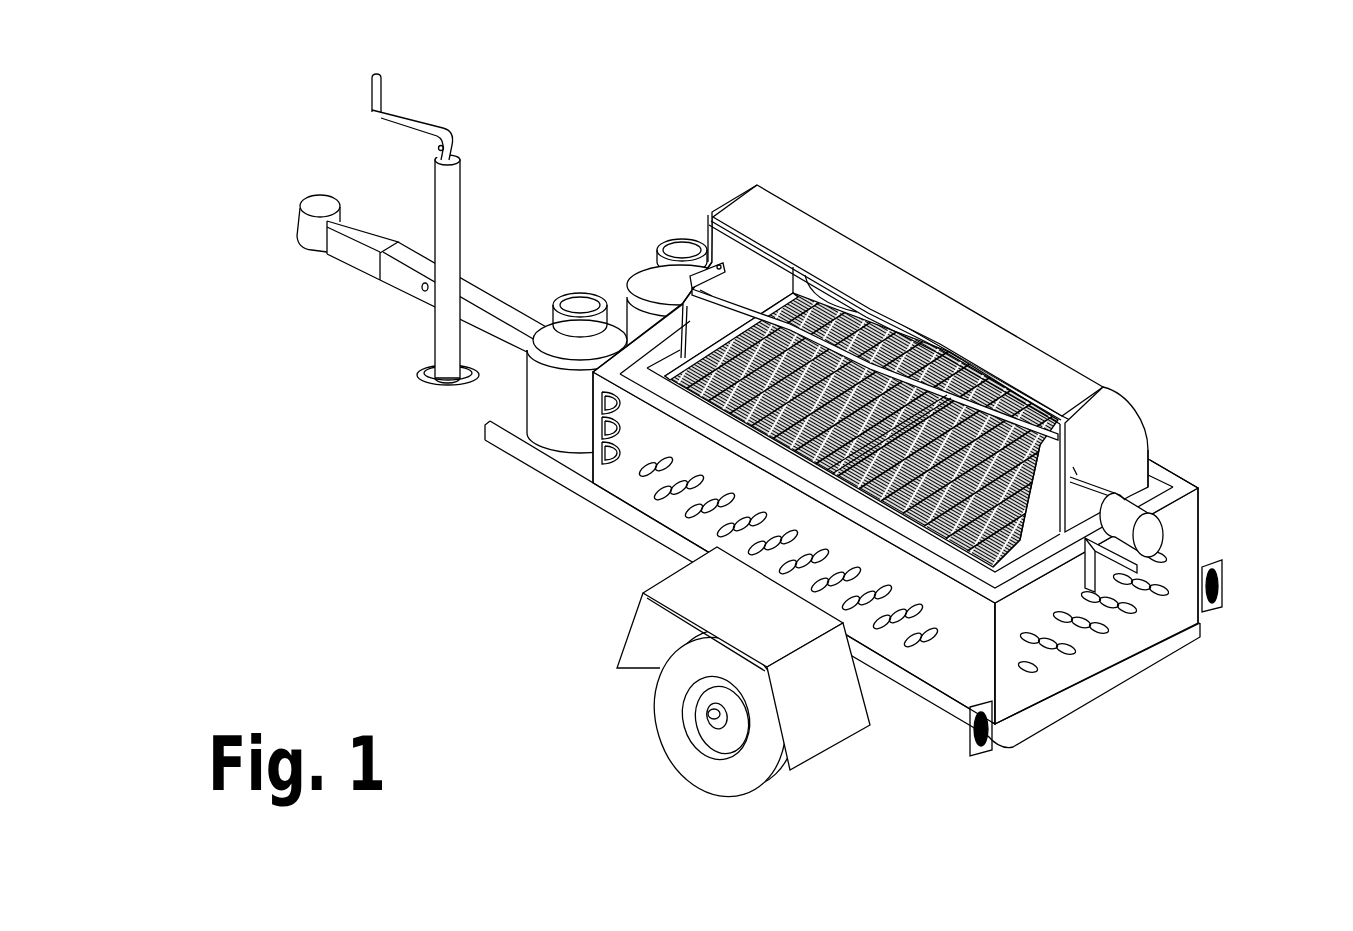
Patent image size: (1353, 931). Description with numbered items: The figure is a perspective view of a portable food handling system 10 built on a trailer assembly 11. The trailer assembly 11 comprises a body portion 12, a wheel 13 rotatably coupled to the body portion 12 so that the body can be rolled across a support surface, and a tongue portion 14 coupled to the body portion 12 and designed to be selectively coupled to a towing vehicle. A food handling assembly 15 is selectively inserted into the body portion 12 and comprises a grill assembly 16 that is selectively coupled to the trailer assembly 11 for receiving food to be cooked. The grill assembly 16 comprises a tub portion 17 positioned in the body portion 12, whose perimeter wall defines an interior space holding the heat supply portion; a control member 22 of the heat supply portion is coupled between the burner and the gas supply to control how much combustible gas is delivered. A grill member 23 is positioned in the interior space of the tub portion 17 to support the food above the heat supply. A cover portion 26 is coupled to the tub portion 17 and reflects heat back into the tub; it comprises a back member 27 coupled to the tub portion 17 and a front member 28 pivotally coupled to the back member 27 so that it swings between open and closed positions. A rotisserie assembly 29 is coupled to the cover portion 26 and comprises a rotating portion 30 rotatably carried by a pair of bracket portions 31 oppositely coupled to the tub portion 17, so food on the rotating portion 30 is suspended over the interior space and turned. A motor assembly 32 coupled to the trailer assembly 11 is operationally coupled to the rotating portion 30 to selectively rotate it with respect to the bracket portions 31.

The portable food handling system 10 is at (1087, 190).
The trailer assembly 11 is at (478, 466).
The body portion 12 is at (843, 503).
The wheel 13 is at (675, 717).
The tongue portion 14 is at (397, 273).
The food handling assembly 15 is at (949, 250).
The grill assembly 16 is at (1036, 285).
The tub portion 17 is at (993, 560).
The control member 22 is at (597, 433).
The grill member 23 is at (683, 470).
The cover portion 26 is at (1110, 396).
The back member 27 is at (1130, 436).
The front member 28 is at (805, 275).
The rotisserie assembly 29 is at (1155, 533).
The rotating portion 30 is at (637, 281).
The bracket portions 31 is at (700, 292).
The motor assembly 32 is at (1184, 521).